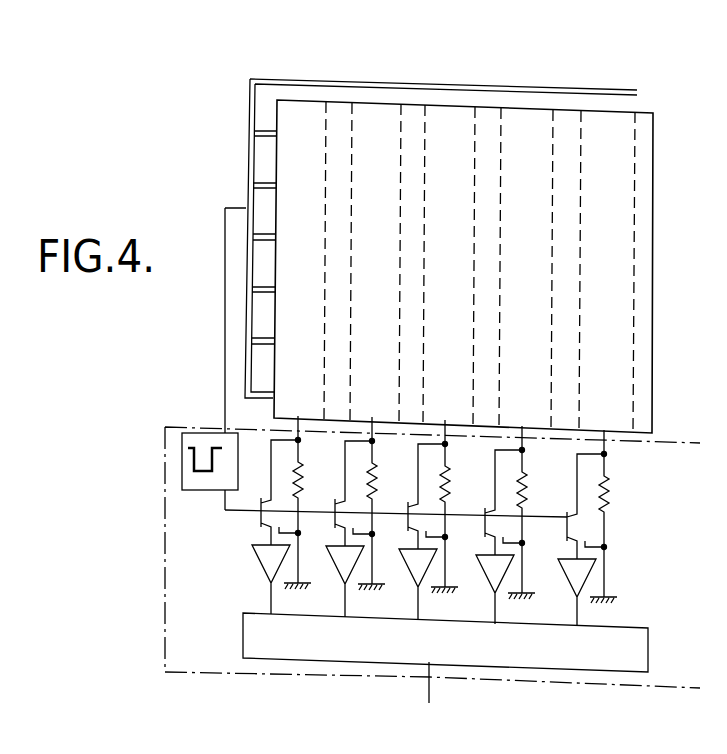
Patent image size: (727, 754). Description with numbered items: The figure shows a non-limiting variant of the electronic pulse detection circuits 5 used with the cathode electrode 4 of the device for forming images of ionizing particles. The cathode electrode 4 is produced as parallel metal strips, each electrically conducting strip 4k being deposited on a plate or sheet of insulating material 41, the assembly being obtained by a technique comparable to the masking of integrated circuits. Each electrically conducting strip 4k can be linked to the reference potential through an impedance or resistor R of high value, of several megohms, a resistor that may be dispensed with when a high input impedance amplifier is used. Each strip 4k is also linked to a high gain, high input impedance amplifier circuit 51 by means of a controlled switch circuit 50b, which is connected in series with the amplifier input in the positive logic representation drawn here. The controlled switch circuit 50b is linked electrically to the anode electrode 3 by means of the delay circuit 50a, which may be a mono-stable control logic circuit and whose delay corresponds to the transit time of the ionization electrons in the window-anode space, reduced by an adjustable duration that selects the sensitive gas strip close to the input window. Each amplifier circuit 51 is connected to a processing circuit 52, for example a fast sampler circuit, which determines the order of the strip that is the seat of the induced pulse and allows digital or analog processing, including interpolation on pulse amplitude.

The anode electrode 3 is at (303, 82).
The cathode electrode 4 is at (483, 236).
The plate or sheet of insulating material 41 is at (310, 130).
The electrically conducting strip 4k is at (518, 133).
The electronic circuits 5 is at (185, 550).
The delay circuit 50a is at (182, 457).
The controlled switch circuit 50b is at (407, 499).
The amplifier circuit 51 is at (408, 585).
The processing circuit 52 is at (257, 631).